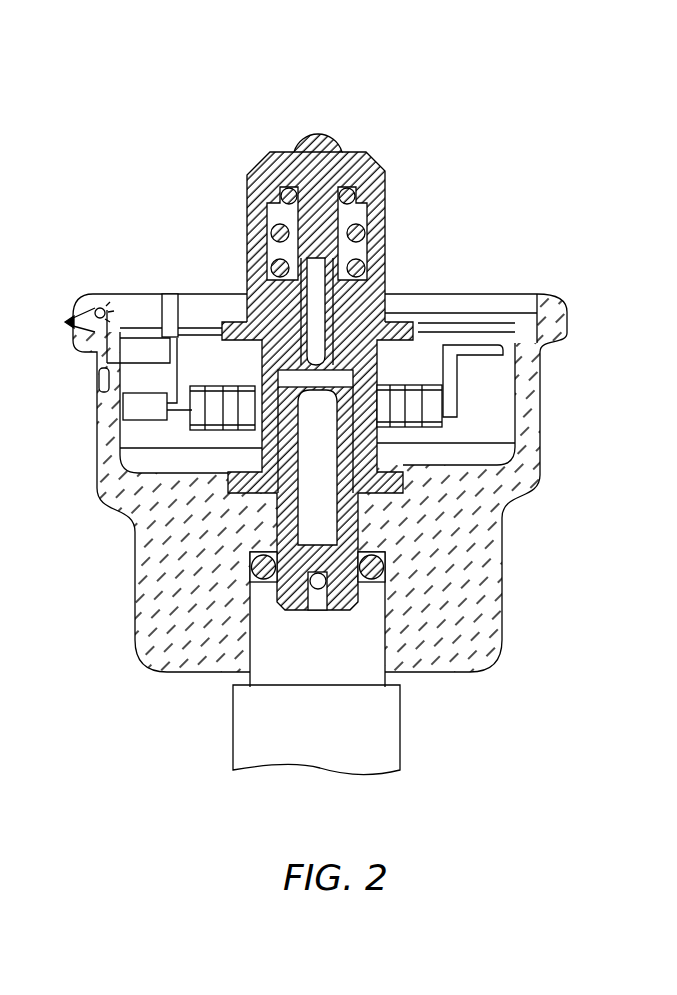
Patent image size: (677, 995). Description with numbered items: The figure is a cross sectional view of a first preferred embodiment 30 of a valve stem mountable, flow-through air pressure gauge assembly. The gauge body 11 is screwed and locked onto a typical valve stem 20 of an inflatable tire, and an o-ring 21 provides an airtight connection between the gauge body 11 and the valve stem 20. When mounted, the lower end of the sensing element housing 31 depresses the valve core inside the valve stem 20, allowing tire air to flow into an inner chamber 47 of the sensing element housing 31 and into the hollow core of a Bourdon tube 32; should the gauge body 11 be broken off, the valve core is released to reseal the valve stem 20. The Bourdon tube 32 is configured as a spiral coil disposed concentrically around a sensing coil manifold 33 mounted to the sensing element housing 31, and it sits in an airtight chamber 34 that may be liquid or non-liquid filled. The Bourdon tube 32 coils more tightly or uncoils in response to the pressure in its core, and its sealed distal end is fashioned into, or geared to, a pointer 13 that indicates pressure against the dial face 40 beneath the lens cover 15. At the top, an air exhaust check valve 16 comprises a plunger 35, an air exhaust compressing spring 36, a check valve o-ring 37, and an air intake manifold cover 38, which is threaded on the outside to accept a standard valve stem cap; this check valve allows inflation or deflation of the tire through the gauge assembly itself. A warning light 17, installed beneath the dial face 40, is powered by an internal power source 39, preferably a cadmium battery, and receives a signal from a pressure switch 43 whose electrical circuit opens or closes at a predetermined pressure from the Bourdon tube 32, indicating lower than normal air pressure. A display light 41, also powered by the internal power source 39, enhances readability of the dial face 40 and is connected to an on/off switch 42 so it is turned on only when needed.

The gauge body 11 is at (498, 527).
The pointer 13 is at (468, 340).
The lens cover 15 is at (197, 302).
The air exhaust check valve 16 is at (345, 135).
The warning light 17 is at (177, 305).
The valve stem 20 is at (383, 712).
The o-ring 21 is at (247, 583).
The first preferred embodiment 30 is at (533, 675).
The sensing element housing 31 is at (265, 500).
The Bourdon tube 32 is at (187, 418).
The sensing coil manifold 33 is at (386, 292).
The airtight chamber 34 is at (487, 397).
The plunger 35 is at (300, 137).
The air exhaust compressing spring 36 is at (385, 225).
The check valve o-ring 37 is at (352, 190).
The air intake manifold cover 38 is at (247, 185).
The internal power source 39 is at (100, 381).
The dial face 40 is at (150, 330).
The display light 41 is at (82, 302).
The on/off switch 42 is at (66, 322).
The pressure switch 43 is at (137, 408).
The inner chamber 47 is at (320, 515).